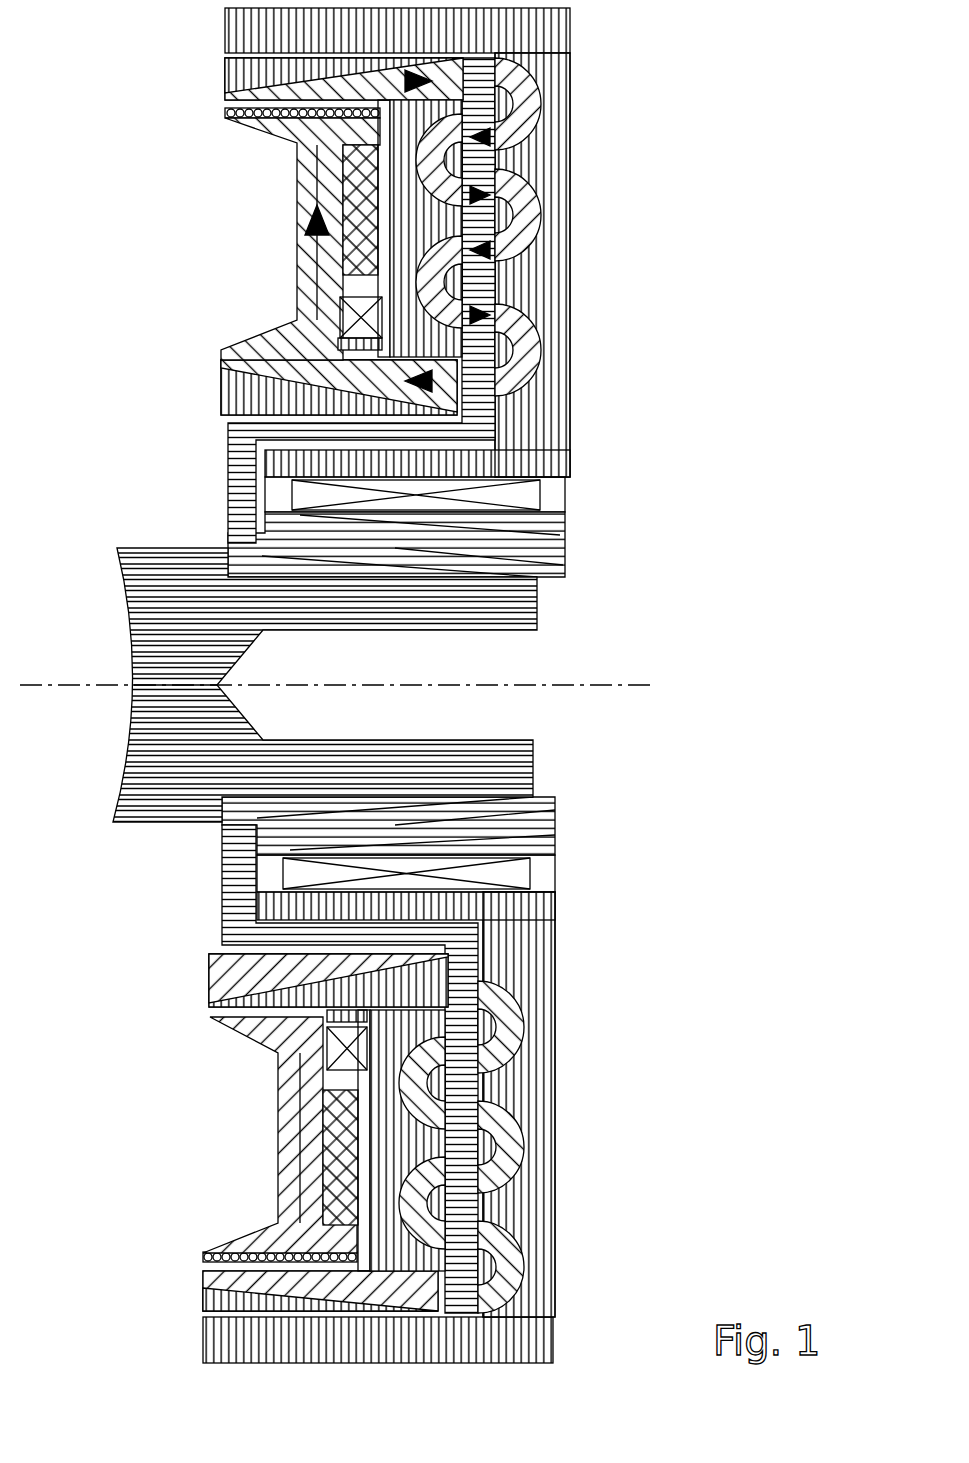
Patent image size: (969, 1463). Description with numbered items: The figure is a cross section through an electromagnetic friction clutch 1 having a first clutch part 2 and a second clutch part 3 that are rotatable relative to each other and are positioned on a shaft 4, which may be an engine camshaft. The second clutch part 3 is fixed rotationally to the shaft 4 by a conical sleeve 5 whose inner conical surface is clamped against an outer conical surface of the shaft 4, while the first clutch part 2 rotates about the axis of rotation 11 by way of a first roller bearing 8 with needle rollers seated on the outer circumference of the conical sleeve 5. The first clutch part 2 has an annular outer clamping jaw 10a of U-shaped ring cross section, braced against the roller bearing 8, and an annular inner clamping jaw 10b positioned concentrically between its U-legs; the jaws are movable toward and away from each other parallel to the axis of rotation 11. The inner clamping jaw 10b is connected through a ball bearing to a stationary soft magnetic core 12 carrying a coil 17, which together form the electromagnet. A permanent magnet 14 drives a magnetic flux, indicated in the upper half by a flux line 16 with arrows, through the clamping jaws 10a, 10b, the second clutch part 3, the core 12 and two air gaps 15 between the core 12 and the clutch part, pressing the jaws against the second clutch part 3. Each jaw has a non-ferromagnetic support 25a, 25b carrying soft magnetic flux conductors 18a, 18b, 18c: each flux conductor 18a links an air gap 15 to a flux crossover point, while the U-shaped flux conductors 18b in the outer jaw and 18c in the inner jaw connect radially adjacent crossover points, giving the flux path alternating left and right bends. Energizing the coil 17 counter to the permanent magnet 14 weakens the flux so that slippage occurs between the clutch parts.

The electromagnetic friction clutch 1 is at (740, 1145).
The first clutch part 2 is at (205, 72).
The second clutch part 3 is at (480, 68).
The shaft 4 is at (105, 626).
The conical sleeve 5 is at (560, 545).
The first roller bearing 8 is at (525, 495).
The outer clamping jaw 10a is at (582, 266).
The inner clamping jaw 10b is at (213, 405).
The axis of rotation 11 is at (655, 685).
The soft magnetic core 12 is at (300, 172).
The permanent magnet 14 is at (222, 112).
The air gap 15 is at (218, 107).
The flux line 16 is at (387, 267).
The coil 17 is at (360, 182).
The flux conductor 18a is at (250, 92).
The flux conductor 18b is at (545, 105).
The flux conductor 18c is at (445, 157).
The support 25a is at (552, 412).
The support 25b is at (397, 227).